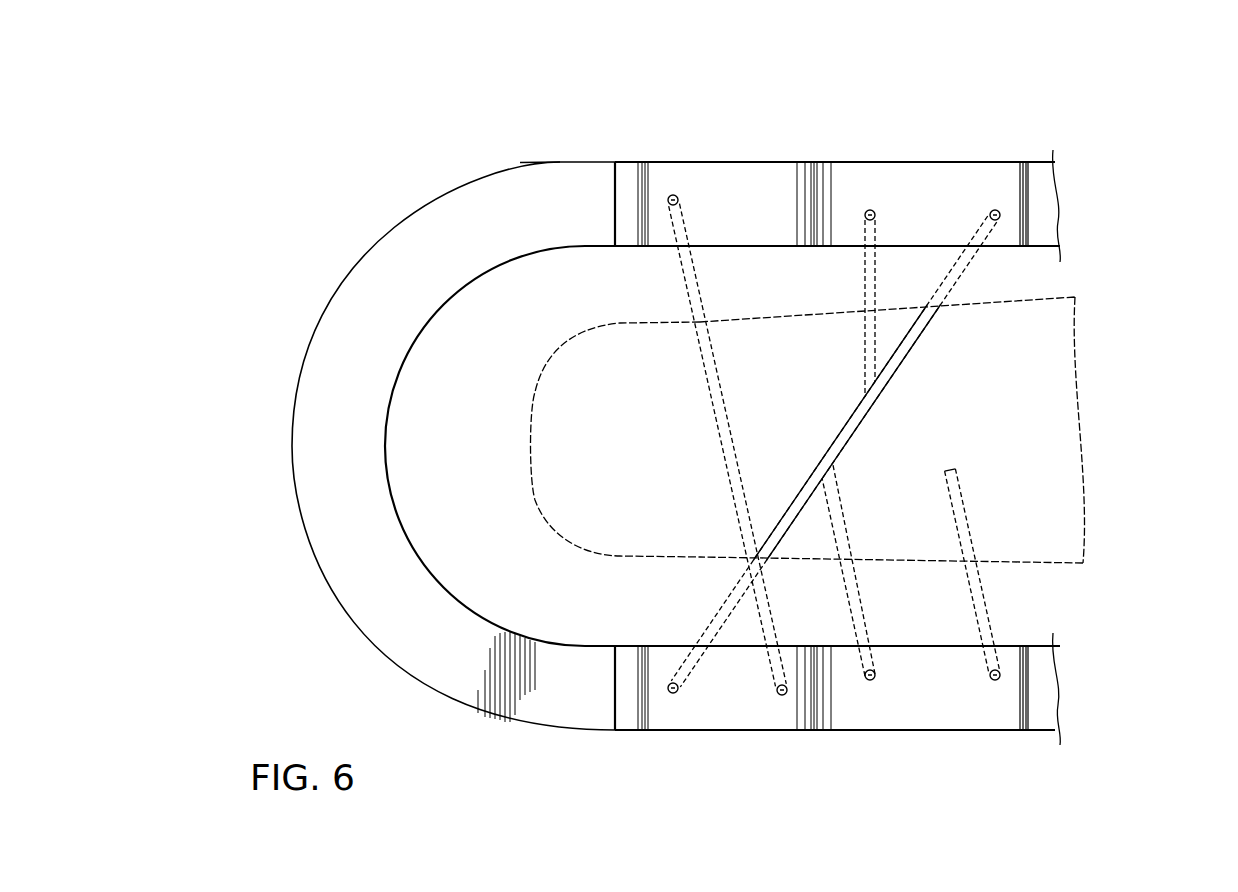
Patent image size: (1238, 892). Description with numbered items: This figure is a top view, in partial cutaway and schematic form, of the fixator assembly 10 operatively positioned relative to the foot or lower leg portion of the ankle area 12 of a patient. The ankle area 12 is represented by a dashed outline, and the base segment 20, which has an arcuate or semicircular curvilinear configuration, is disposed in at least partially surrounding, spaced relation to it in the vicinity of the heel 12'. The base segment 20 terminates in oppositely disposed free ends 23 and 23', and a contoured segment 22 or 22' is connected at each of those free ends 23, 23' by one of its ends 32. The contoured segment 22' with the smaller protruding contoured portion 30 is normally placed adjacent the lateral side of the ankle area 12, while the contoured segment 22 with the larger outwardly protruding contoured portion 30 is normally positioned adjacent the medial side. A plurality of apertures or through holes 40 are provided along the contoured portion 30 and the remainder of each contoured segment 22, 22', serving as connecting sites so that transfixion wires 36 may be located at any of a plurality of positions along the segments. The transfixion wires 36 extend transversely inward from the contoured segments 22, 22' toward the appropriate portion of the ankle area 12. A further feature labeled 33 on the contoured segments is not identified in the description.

The fixator assembly 10 is at (342, 191).
The ankle area 12 is at (823, 430).
The heel 12' is at (573, 439).
The base segment 20 is at (294, 582).
The contoured segment 22 is at (990, 728).
The contoured segment 22' is at (994, 164).
The free end of base segment 23 is at (507, 735).
The free end of base segment 23' is at (517, 108).
The contoured portion 30 is at (755, 155).
The end of contoured segment 32 is at (615, 247).
The intermediate groove 33 is at (813, 162).
The transfixion wires 36 is at (862, 281).
The apertures 40 is at (668, 196).